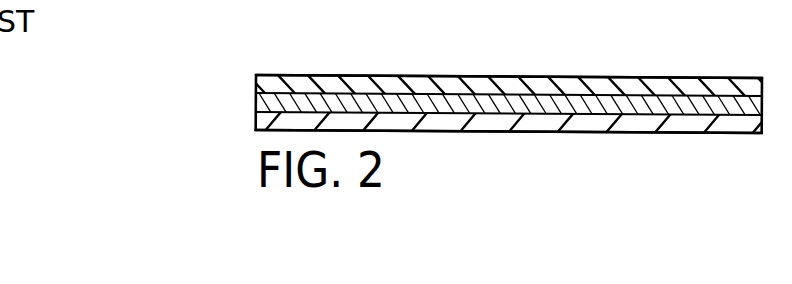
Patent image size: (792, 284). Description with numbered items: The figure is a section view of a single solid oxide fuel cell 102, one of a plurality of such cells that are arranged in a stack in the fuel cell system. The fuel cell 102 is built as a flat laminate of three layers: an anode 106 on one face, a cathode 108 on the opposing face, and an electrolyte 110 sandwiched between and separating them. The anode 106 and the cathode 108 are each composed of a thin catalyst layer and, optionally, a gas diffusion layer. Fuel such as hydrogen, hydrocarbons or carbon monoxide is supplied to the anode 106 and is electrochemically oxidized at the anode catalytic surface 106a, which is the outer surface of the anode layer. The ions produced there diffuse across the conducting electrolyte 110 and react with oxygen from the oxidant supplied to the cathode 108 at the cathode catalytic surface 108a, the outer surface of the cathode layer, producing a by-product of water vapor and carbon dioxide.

The solid oxide fuel cell 102 is at (467, 89).
The anode 106 is at (477, 63).
The anode catalytic surface 106a is at (450, 76).
The cathode 108 is at (474, 144).
The cathode catalytic surface 108a is at (450, 133).
The electrolyte 110 is at (256, 100).